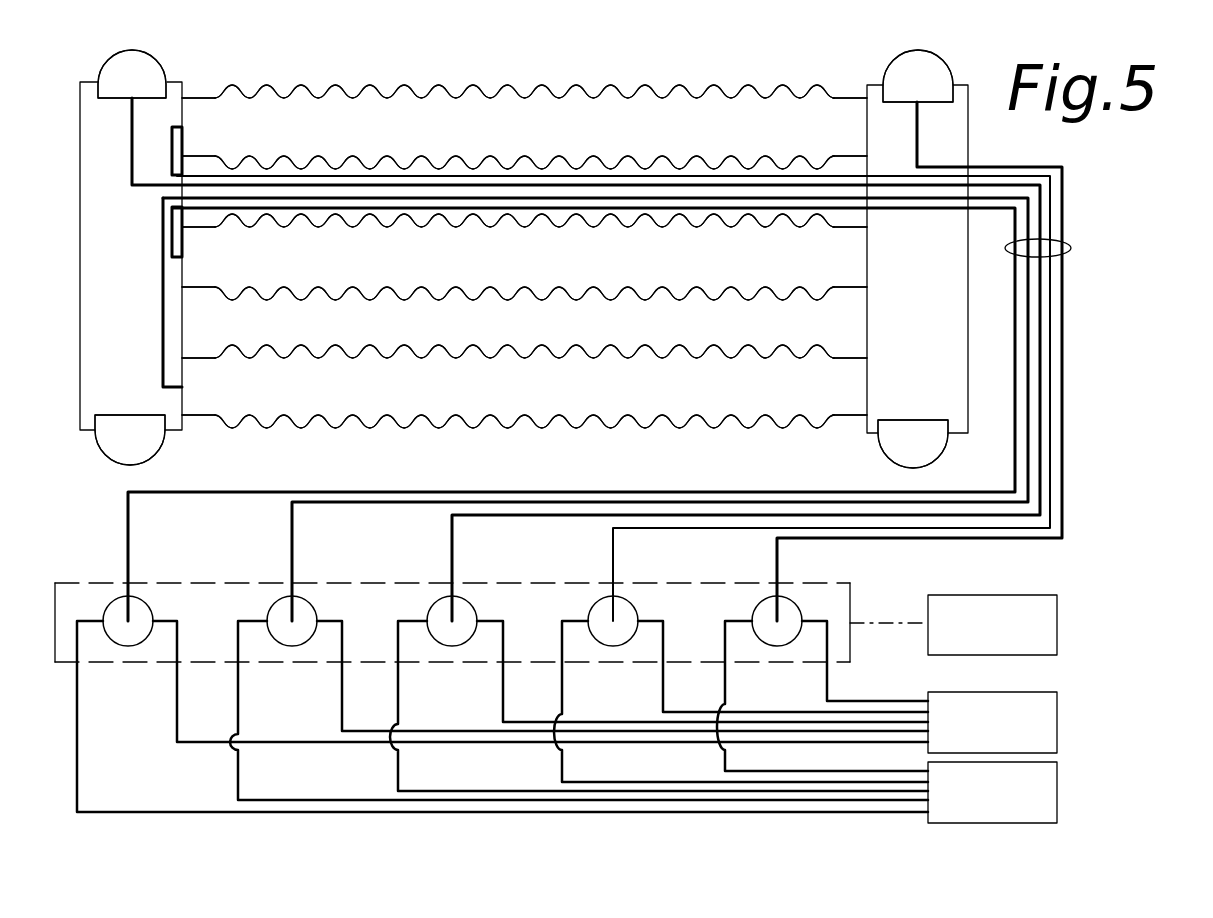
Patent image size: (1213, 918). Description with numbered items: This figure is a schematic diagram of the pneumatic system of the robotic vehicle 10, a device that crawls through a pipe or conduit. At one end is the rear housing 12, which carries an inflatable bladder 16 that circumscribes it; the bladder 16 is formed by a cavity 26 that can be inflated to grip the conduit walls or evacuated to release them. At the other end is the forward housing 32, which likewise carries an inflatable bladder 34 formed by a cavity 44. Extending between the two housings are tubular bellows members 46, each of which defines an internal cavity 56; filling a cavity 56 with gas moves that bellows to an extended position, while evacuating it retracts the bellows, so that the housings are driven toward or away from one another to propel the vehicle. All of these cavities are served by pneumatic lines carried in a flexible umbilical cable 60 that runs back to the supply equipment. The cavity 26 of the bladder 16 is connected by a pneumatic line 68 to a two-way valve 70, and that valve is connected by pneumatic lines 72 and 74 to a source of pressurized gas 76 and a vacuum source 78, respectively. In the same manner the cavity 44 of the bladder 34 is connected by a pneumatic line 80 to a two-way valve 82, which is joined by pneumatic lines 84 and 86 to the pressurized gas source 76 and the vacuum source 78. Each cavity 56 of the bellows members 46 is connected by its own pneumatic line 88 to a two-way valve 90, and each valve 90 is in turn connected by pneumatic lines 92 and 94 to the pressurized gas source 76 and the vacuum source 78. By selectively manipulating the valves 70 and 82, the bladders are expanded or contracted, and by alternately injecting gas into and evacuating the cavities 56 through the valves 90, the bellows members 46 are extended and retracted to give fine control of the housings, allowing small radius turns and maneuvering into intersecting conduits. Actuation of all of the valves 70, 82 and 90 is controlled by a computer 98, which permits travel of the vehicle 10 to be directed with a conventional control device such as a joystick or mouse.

The robotic vehicle 10 is at (676, 47).
The rear housing 12 is at (917, 259).
The inflatable bladder 16 is at (937, 56).
The cavity 26 is at (915, 259).
The forward housing 32 is at (131, 256).
The inflatable bladder 34 is at (160, 57).
The cavity 44 is at (130, 257).
The tubular bellows member 46 is at (495, 86).
The cavity 56 is at (524, 256).
The flexible umbilical cable 60 is at (1071, 248).
The pneumatic line 68 is at (920, 130).
The two-way valve 70 is at (801, 624).
The pneumatic line 72 is at (858, 698).
The pneumatic line 74 is at (737, 618).
The source of pressurized gas 76 is at (992, 722).
The vacuum source 78 is at (992, 792).
The pneumatic line 80 is at (130, 118).
The two-way valve 82 is at (472, 606).
The pneumatic line 84 is at (508, 640).
The pneumatic line 86 is at (403, 618).
The pneumatic line 88 is at (172, 152).
The two-way valve 90 is at (148, 606).
The pneumatic line 92 is at (183, 640).
The pneumatic line 94 is at (82, 618).
The computer 98 is at (992, 625).